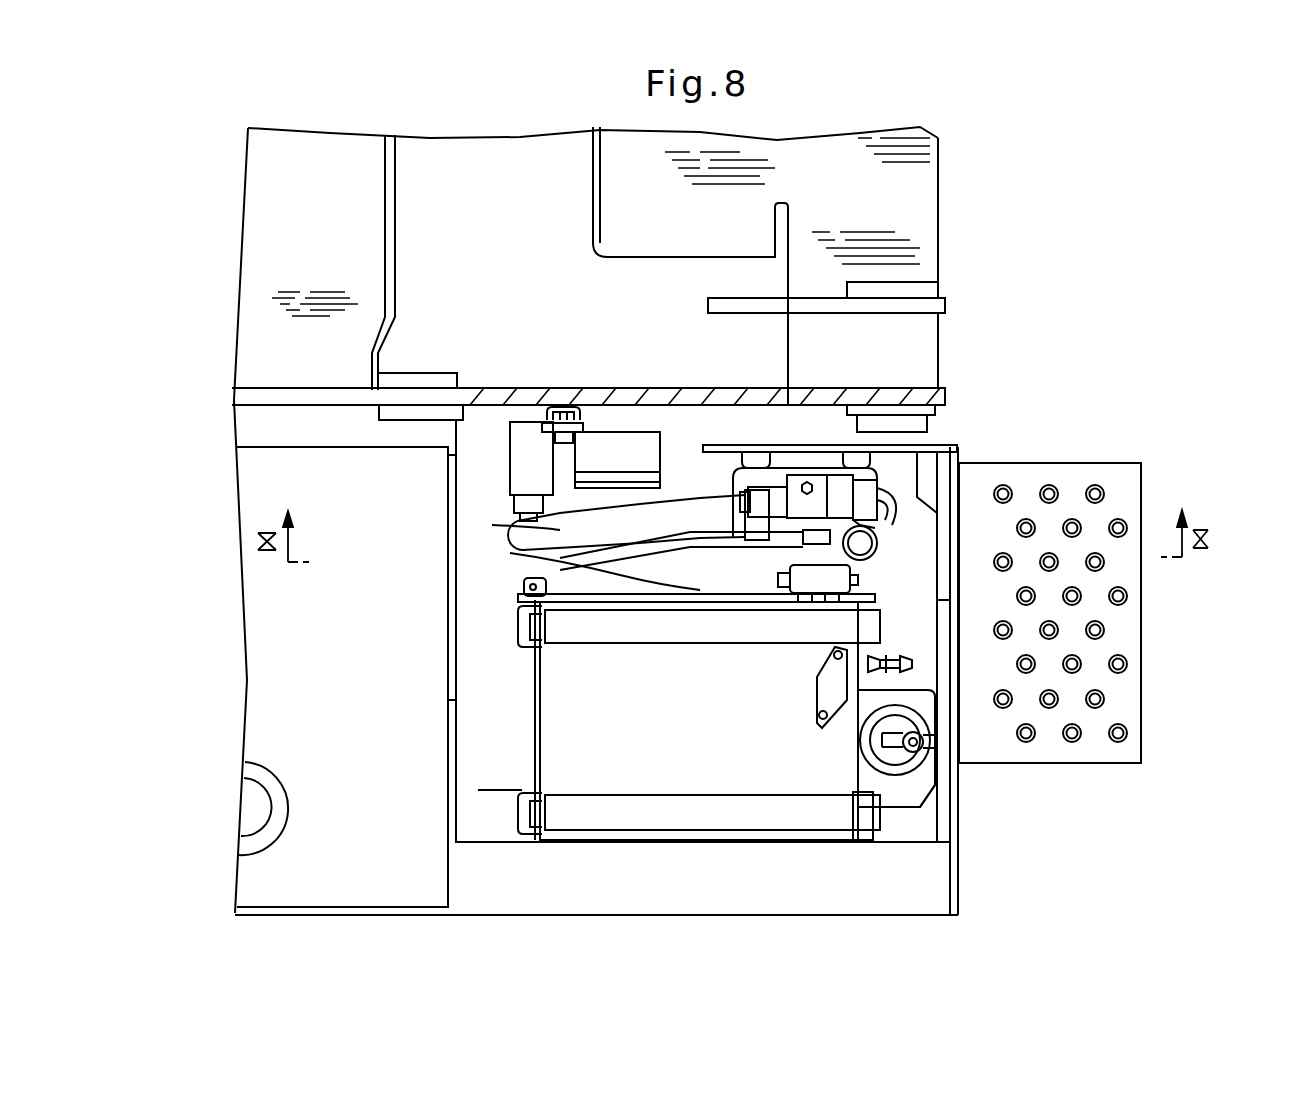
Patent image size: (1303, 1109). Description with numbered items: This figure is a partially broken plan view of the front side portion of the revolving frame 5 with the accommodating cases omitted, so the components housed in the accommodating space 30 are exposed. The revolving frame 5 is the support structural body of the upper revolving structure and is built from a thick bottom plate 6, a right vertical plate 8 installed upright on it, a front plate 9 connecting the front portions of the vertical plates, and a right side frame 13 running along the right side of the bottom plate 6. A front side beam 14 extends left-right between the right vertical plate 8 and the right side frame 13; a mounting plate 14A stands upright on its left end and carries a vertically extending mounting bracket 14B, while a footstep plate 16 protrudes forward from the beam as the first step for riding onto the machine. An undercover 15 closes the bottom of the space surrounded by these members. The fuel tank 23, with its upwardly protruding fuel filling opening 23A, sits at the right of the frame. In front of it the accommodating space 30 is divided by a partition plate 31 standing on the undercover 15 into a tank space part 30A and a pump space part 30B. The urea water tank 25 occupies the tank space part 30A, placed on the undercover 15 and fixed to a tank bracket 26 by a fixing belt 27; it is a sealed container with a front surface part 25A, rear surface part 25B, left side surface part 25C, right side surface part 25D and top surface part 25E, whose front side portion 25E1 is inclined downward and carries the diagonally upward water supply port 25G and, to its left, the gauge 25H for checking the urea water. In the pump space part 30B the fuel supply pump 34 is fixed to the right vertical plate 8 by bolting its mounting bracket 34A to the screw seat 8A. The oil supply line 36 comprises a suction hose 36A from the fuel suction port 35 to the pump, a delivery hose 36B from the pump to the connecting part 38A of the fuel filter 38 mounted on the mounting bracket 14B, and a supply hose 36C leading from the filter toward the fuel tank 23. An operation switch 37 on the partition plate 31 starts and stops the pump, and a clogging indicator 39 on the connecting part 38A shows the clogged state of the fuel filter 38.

The revolving frame 5 is at (940, 270).
The bottom plate 6 is at (270, 213).
The right vertical plate 8 is at (288, 397).
The screw seat 8A is at (551, 407).
The front plate 9 is at (442, 188).
The right side frame 13 is at (478, 882).
The front side beam 14 is at (955, 830).
The mounting plate 14A is at (943, 445).
The mounting bracket 14B is at (710, 447).
The undercover 15 is at (890, 600).
The footstep plate 16 is at (1077, 510).
The fuel tank 23 is at (270, 670).
The fuel filling opening 23A is at (250, 808).
The urea water tank 25 is at (678, 733).
The front surface part 25A is at (855, 837).
The rear surface part 25B is at (540, 748).
The left side surface part 25C is at (600, 596).
The right side surface part 25D is at (613, 843).
The top surface part 25E is at (732, 762).
The front side portion 25E1 is at (903, 782).
The water supply port 25G is at (928, 753).
The gauge 25H is at (912, 665).
The tank bracket 26 is at (583, 628).
The fixing belt 27 is at (525, 614).
The accommodating space 30 is at (493, 688).
The tank space part 30A is at (498, 705).
The pump space part 30B is at (492, 457).
The partition plate 31 is at (510, 553).
The fuel supply pump 34 is at (597, 440).
The mounting bracket 34A is at (548, 418).
The fuel suction port 35 is at (817, 517).
The oil supply line 36 is at (657, 525).
The suction hose 36A is at (628, 523).
The delivery hose 36B is at (679, 547).
The supply hose 36C is at (492, 525).
The operation switch 37 is at (840, 580).
The fuel filter 38 is at (778, 480).
The connecting part 38A is at (800, 477).
The clogging indicator 39 is at (860, 543).